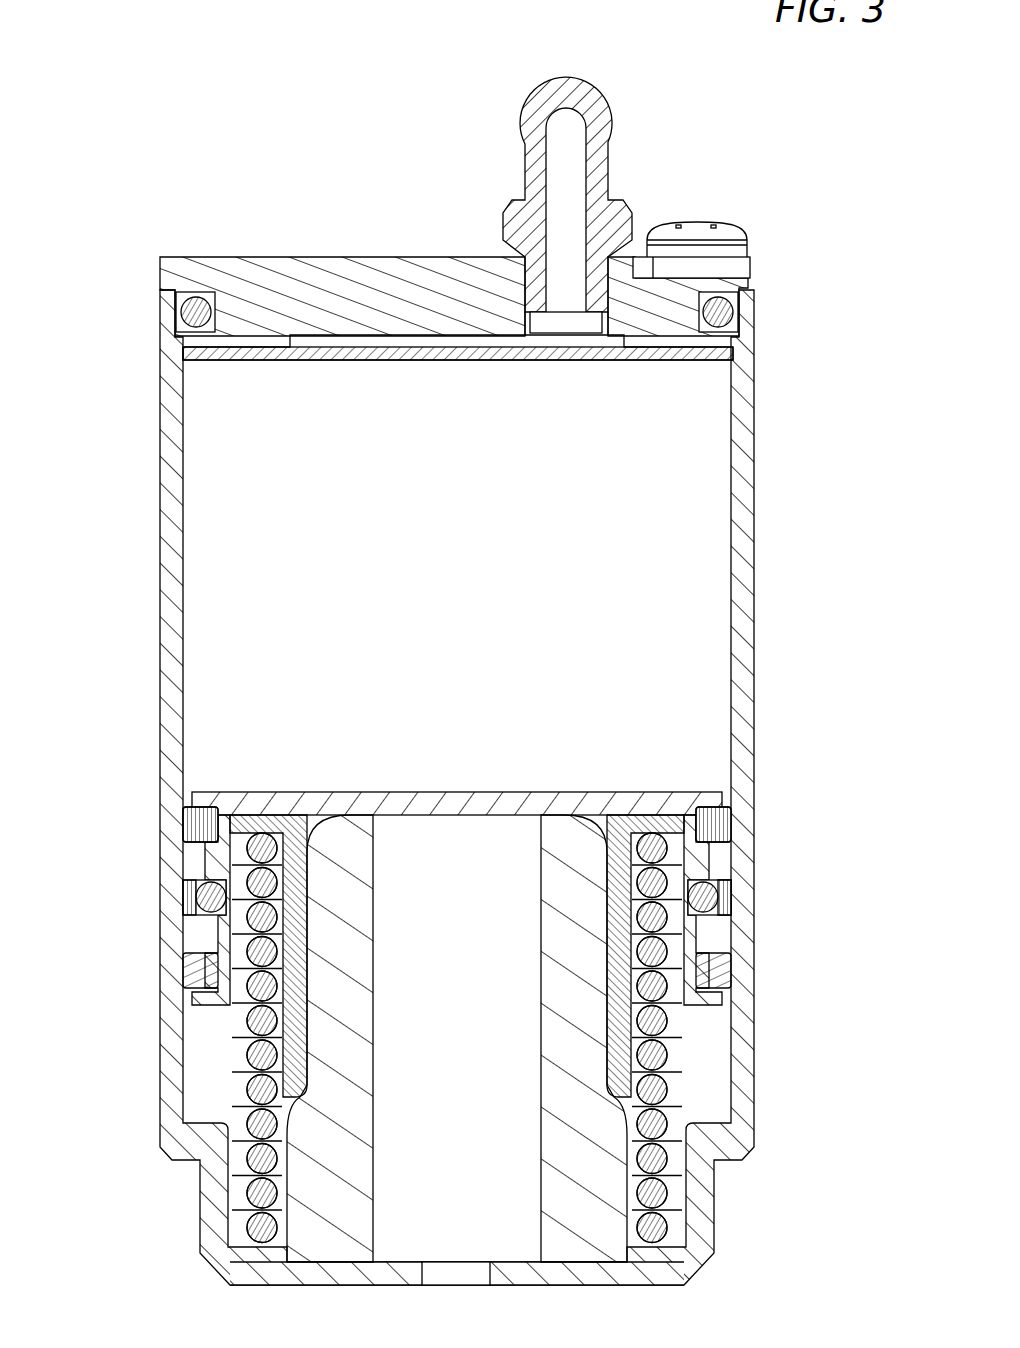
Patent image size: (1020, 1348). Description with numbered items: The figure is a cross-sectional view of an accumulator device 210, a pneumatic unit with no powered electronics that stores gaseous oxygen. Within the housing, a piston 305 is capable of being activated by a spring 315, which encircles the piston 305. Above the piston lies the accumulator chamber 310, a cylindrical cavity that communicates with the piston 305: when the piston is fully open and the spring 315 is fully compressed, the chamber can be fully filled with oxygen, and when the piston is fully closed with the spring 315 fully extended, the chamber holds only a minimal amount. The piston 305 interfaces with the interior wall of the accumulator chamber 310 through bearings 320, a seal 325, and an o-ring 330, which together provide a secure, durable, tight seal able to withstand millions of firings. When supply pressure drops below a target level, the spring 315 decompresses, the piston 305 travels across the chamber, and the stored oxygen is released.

The accumulator device 210 is at (858, 107).
The piston 305 is at (585, 795).
The accumulator chamber 310 is at (620, 510).
The spring 315 is at (658, 1028).
The bearings 320 is at (735, 962).
The seal 325 is at (207, 897).
The o-ring 330 is at (187, 902).